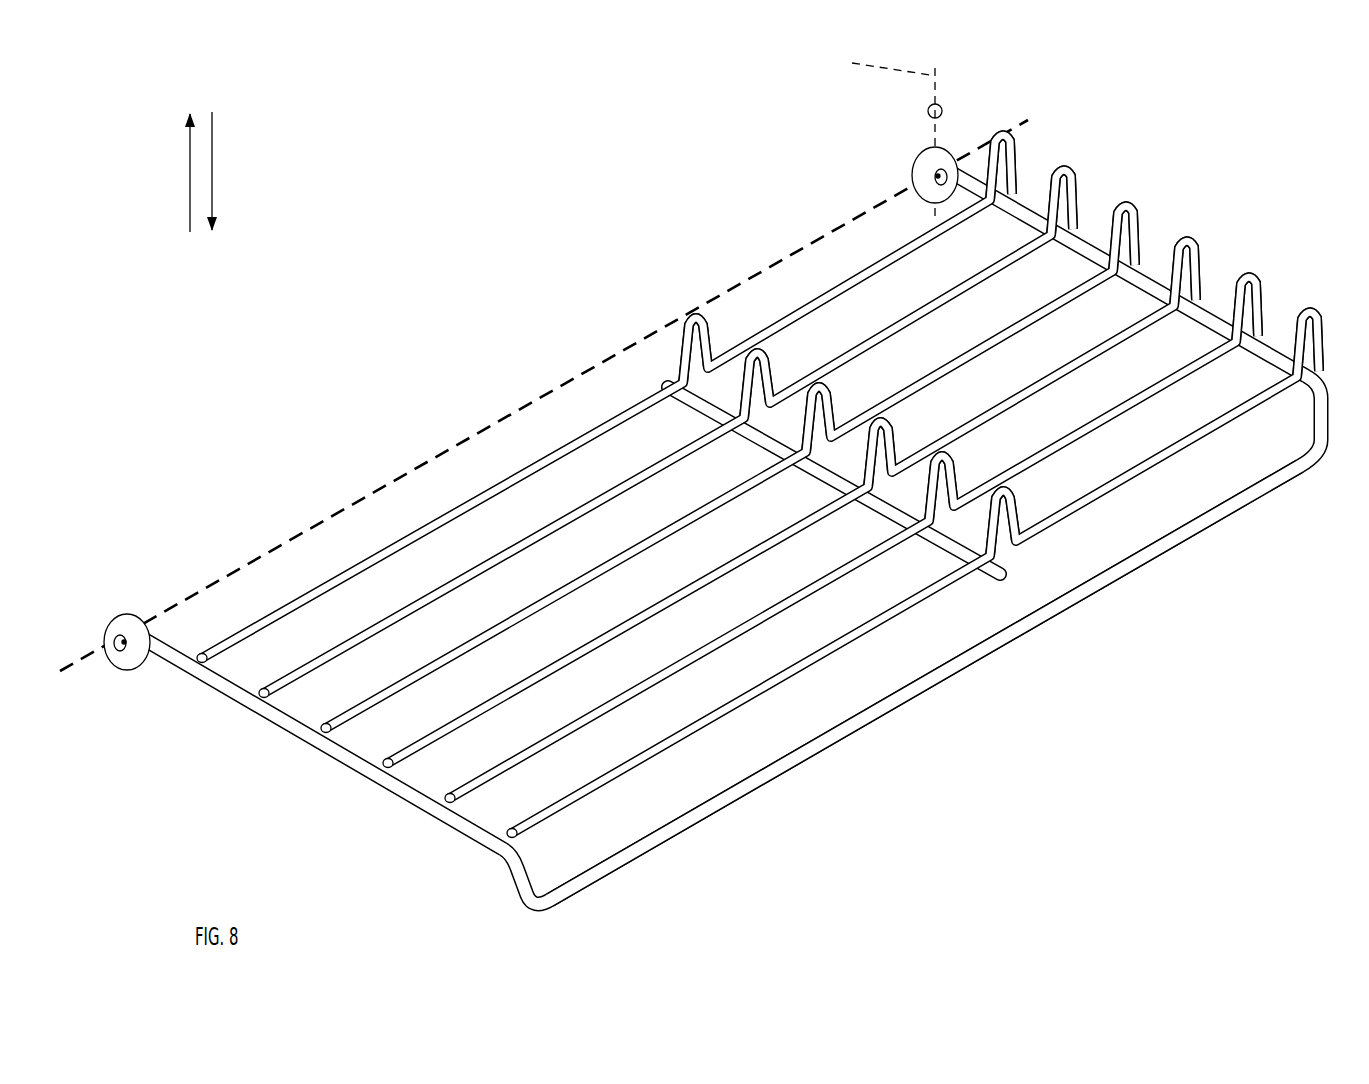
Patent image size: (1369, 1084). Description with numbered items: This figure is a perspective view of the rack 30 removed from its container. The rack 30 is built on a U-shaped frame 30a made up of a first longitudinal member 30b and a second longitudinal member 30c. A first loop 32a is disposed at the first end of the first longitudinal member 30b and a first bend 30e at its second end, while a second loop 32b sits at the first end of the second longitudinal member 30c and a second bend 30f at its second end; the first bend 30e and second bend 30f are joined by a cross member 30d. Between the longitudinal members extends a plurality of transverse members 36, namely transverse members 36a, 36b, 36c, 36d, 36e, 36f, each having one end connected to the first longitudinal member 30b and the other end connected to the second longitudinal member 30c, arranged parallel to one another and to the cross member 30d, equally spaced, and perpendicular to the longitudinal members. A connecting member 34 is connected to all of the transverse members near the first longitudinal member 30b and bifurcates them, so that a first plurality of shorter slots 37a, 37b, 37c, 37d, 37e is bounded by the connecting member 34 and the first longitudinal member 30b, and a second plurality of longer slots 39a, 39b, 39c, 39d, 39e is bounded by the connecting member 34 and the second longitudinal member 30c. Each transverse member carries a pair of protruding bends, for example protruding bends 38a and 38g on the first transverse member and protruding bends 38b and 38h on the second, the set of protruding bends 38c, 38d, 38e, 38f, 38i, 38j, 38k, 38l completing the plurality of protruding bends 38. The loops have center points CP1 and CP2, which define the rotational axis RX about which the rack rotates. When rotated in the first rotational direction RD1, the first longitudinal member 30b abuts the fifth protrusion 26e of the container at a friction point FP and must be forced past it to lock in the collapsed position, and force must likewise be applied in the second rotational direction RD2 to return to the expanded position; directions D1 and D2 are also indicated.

The fifth protrusion 26e is at (945, 112).
The rack 30 is at (712, 518).
The U-shaped frame 30a is at (905, 730).
The first longitudinal member 30b is at (1148, 278).
The second longitudinal member 30c is at (177, 650).
The cross member 30d is at (990, 647).
The first bend 30e is at (1345, 435).
The second bend 30f is at (490, 897).
The first loop 32a is at (902, 165).
The second loop 32b is at (149, 688).
The connecting member 34 is at (943, 547).
The plurality of transverse members 36 is at (760, 484).
The first transverse member 36a is at (703, 725).
The second transverse member 36b is at (650, 683).
The third transverse member 36c is at (592, 646).
The fourth transverse member 36d is at (535, 608).
The fifth transverse member 36e is at (485, 568).
The sixth transverse member 36f is at (432, 530).
The first slot 37a is at (1169, 439).
The second slot 37b is at (1114, 399).
The third slot 37c is at (1049, 366).
The fourth slot 37d is at (986, 331).
The fifth slot 37e is at (929, 293).
The plurality of protruding bends 38 is at (965, 329).
The first protruding bend 38a is at (1282, 331).
The second protruding bend 38b is at (1279, 283).
The third protruding bend 38c is at (1213, 231).
The fourth protruding bend 38d is at (1099, 226).
The fifth protruding bend 38e is at (1093, 172).
The sixth protruding bend 38f is at (1026, 147).
The seventh protruding bend 38g is at (1023, 486).
The eighth protruding bend 38h is at (963, 450).
The ninth protruding bend 38i is at (901, 417).
The tenth protruding bend 38j is at (841, 384).
The eleventh protruding bend 38k is at (778, 355).
The twelfth protruding bend 38l is at (666, 347).
The sixth slot 39a is at (586, 774).
The seventh slot 39b is at (526, 737).
The eighth slot 39c is at (461, 703).
The ninth slot 39d is at (401, 666).
The tenth slot 39e is at (346, 629).
The first center point CP1 is at (930, 165).
The second center point CP2 is at (122, 640).
The friction point FP is at (875, 133).
The rotational axis RX is at (290, 548).
The first rotational direction RD1 is at (409, 510).
The second rotational direction RD2 is at (333, 548).
The direction D1 is at (188, 150).
The direction D2 is at (214, 192).